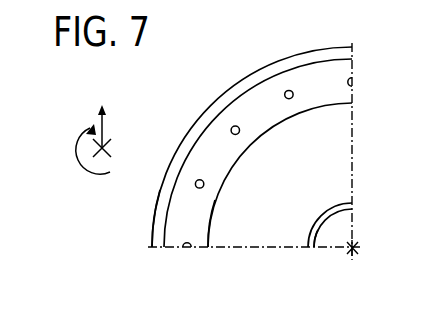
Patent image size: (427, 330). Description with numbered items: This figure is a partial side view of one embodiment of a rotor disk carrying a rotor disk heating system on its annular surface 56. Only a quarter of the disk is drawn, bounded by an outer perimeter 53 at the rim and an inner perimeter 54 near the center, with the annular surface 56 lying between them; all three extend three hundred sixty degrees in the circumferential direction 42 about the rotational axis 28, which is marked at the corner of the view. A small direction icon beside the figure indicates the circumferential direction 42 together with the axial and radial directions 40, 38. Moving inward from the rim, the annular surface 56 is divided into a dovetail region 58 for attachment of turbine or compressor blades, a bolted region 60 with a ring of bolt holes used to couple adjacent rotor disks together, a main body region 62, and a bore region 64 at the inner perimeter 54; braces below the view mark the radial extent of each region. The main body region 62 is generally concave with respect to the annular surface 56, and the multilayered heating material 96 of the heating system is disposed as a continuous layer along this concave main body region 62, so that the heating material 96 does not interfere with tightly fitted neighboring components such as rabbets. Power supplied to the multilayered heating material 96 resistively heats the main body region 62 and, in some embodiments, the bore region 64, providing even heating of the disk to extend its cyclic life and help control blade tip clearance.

The rotational axis 28 is at (359, 250).
The radial direction 38 is at (108, 147).
The axial direction 40 is at (105, 128).
The circumferential direction 42 is at (78, 150).
The outer perimeter 53 is at (210, 108).
The inner perimeter 54 is at (338, 210).
The annular surface 56 is at (330, 128).
The dovetail region 58 is at (164, 256).
The bolted region 60 is at (208, 256).
The main body region 62 is at (311, 256).
The bore region 64 is at (352, 256).
The multilayered heating material 96 is at (330, 180).